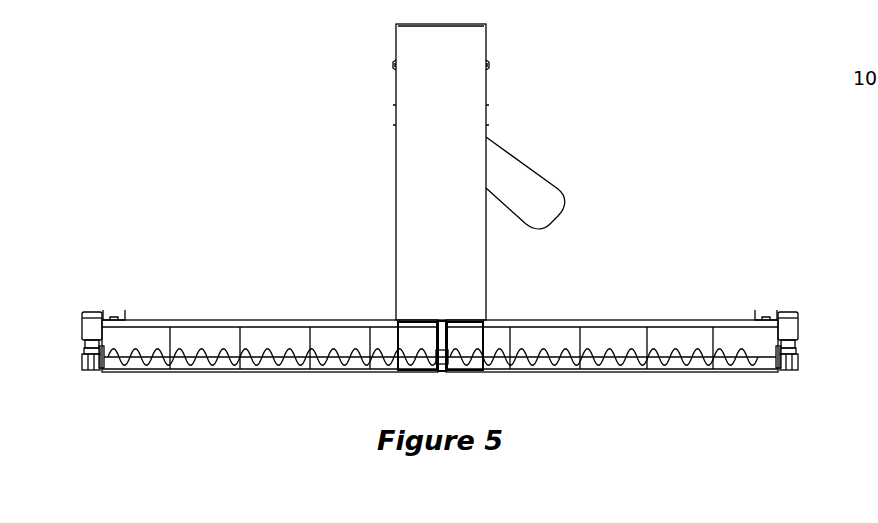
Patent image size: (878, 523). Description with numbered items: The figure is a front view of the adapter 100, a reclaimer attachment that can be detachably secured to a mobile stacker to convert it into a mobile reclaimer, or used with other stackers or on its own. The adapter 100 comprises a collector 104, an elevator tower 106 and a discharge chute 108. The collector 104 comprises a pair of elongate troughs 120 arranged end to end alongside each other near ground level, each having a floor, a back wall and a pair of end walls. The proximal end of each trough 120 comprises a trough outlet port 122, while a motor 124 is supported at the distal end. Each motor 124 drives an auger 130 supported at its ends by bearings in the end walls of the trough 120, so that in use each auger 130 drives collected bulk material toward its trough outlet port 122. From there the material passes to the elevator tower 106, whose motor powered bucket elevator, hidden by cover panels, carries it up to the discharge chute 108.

The adapter 100 is at (702, 152).
The collector 104 is at (157, 384).
The elevator tower 106 is at (377, 138).
The discharge chute 108 is at (524, 180).
The trough 120 is at (265, 340).
The trough outlet port 122 is at (418, 343).
The motor 124 is at (78, 320).
The auger 130 is at (263, 360).